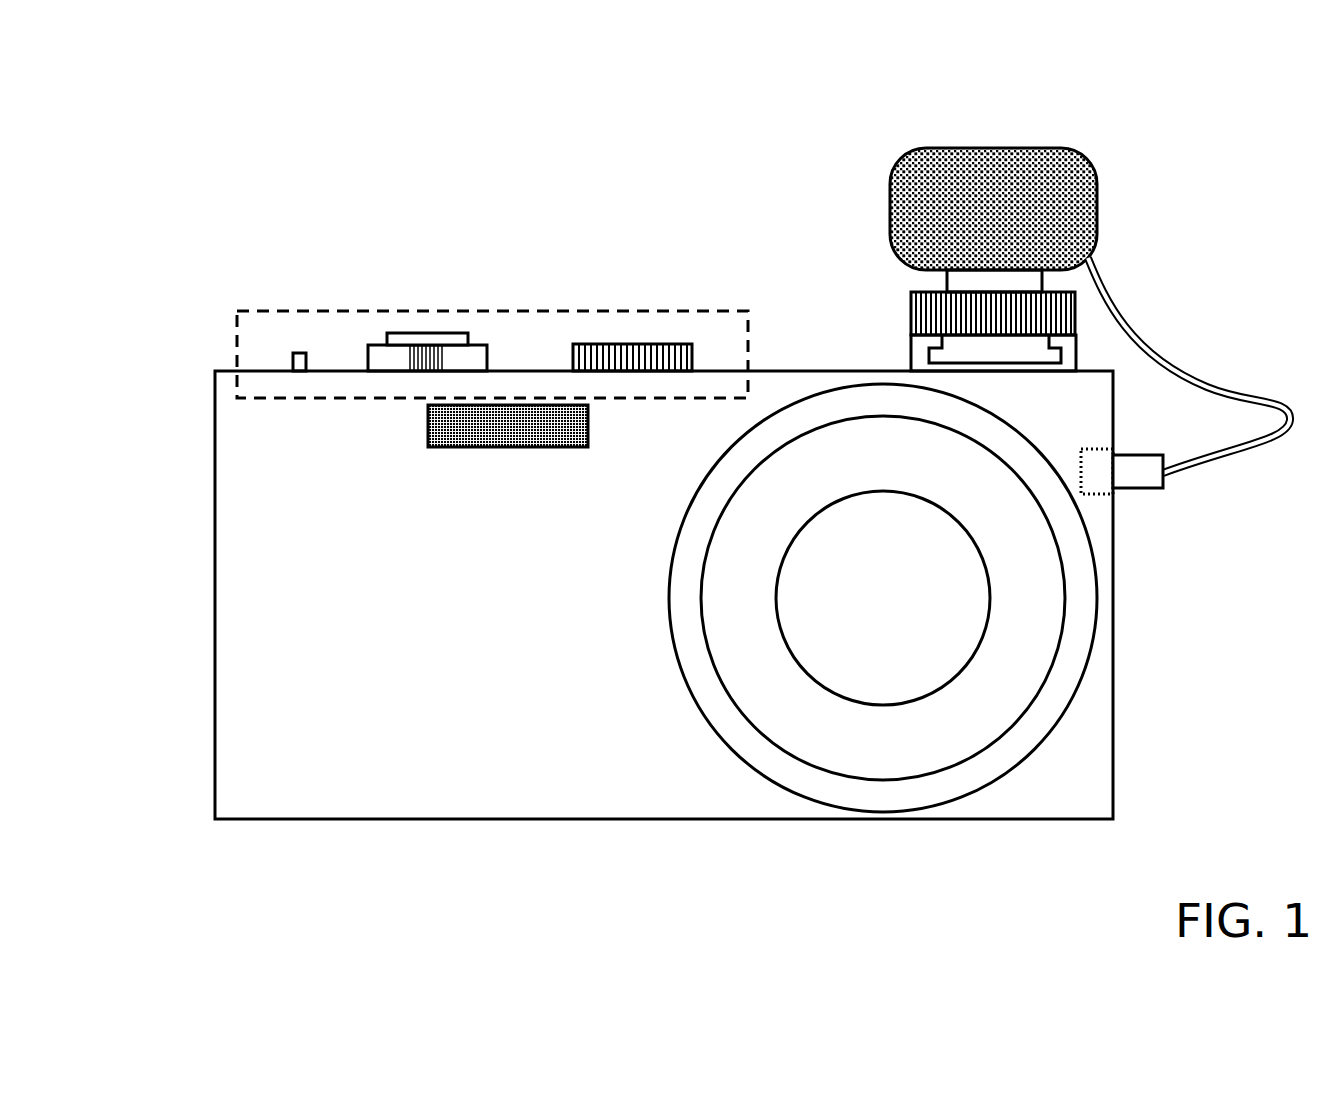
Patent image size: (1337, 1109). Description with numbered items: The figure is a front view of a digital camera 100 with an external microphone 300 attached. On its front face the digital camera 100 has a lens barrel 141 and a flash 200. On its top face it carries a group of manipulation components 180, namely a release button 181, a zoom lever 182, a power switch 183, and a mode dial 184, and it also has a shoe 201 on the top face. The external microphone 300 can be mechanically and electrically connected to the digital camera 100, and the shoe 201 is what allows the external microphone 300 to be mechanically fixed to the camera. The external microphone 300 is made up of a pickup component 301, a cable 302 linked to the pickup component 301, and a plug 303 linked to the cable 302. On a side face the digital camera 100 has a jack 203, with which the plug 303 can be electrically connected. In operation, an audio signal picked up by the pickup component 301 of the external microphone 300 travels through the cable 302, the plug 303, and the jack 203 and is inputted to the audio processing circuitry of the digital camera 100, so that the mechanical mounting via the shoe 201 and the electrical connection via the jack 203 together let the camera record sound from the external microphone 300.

The digital camera 100 is at (312, 844).
The lens barrel 141 is at (1038, 602).
The manipulation components 180 is at (235, 397).
The release button 181 is at (423, 338).
The zoom lever 182 is at (392, 360).
The power switch 183 is at (292, 362).
The mode dial 184 is at (598, 347).
The flash 200 is at (460, 433).
The shoe 201 is at (1063, 345).
The jack 203 is at (1093, 484).
The external microphone 300 is at (1086, 123).
The pickup component 301 is at (1057, 215).
The cable 302 is at (1200, 378).
The plug 303 is at (1147, 473).